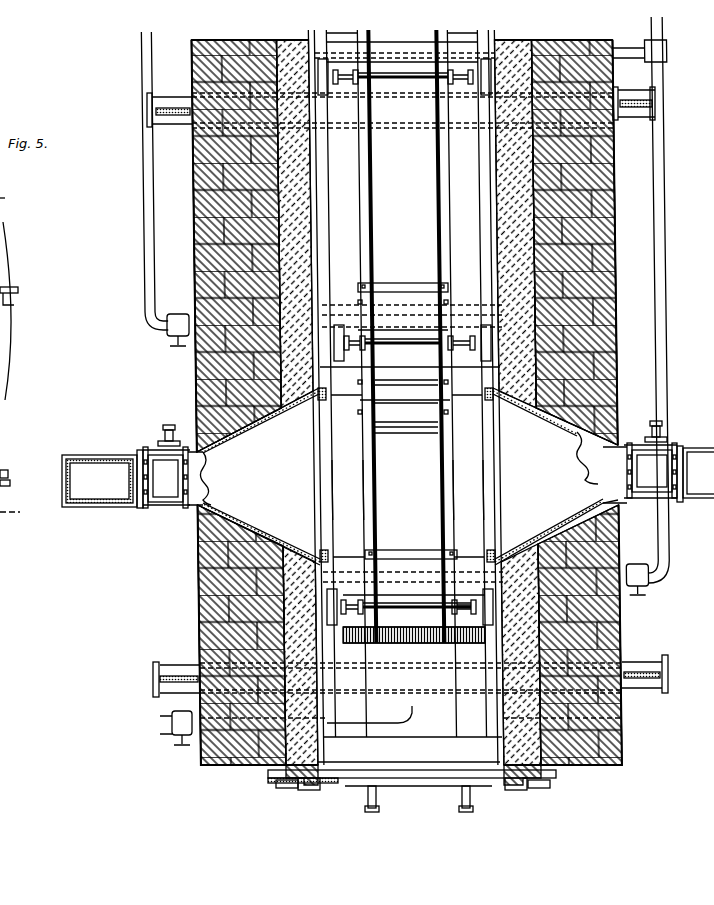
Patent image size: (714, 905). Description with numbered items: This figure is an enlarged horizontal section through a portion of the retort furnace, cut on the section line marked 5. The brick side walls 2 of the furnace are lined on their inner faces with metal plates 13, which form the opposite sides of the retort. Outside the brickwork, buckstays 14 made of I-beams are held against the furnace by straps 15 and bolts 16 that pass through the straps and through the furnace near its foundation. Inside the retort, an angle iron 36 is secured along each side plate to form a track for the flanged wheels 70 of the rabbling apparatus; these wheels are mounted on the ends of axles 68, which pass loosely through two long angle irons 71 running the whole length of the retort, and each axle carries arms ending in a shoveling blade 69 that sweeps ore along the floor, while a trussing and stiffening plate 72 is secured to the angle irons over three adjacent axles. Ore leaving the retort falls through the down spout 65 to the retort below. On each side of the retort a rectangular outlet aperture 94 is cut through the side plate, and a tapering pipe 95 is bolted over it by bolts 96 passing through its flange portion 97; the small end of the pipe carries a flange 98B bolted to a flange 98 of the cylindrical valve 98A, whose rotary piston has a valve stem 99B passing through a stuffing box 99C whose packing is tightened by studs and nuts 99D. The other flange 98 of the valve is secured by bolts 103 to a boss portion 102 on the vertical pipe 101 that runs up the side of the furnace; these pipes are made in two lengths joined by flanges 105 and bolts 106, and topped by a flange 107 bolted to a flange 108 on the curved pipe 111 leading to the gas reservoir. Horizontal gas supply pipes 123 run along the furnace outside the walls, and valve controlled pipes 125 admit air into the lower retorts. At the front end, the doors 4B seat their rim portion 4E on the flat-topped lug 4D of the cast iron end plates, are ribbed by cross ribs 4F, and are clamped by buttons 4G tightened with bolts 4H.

The side walls 2 is at (191, 370).
The cast iron plate 5 is at (17, 512).
The metal plates 13 is at (339, 745).
The buckstays 14 is at (176, 108).
The straps 15 is at (147, 110).
The bolts 16 is at (160, 126).
The angle iron 36 is at (327, 193).
The down spout 65 is at (415, 645).
The axles 68 is at (410, 80).
The shoveling blade 69 is at (418, 393).
The flanged wheels 70 is at (326, 96).
The angle irons 71 is at (435, 505).
The trussing and stiffening plate 72 is at (360, 297).
The outlet apertures 94 is at (327, 487).
The pipe 95 is at (407, 476).
The bolts 96 is at (324, 394).
The flange portion 97 is at (312, 402).
The flange 98 is at (135, 500).
The valve 98A is at (652, 487).
The flange 98B is at (208, 477).
The valve stem 99B is at (170, 429).
The stuffing box 99C is at (162, 441).
The studs and nuts 99D is at (166, 426).
The vertical pipe 101 is at (12, 368).
The boss portion 102 is at (140, 451).
The bolts 103 is at (150, 465).
The flanges 105 is at (22, 470).
The bolts 106 is at (10, 483).
The flange 107 is at (16, 303).
The flange 108 is at (18, 289).
The curved pipe 111 is at (12, 197).
The horizontally extending pipes 123 is at (148, 237).
The valve controlled pipes 125 is at (165, 728).
The doors 4B is at (447, 779).
The flat-topped lug 4D is at (324, 772).
The rim portion 4E is at (322, 785).
The cross ribs 4F is at (402, 788).
The buttons 4G is at (305, 792).
The bolts 4H is at (292, 787).